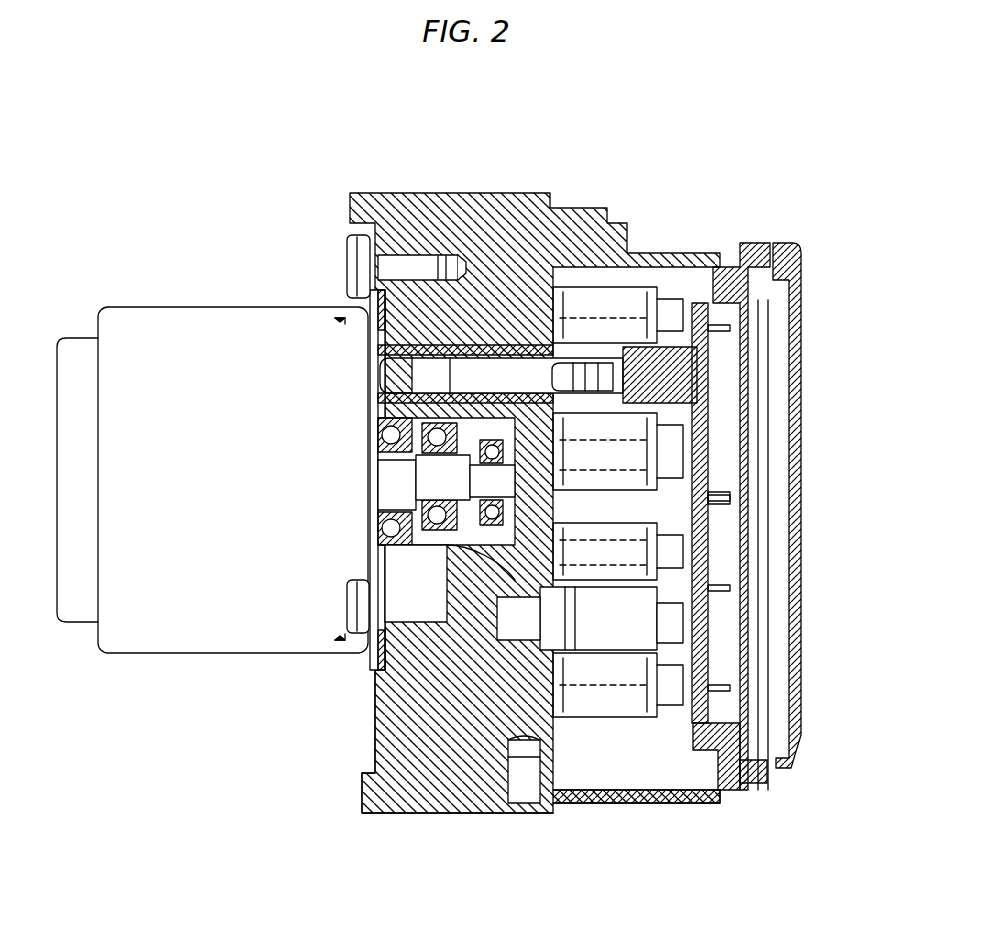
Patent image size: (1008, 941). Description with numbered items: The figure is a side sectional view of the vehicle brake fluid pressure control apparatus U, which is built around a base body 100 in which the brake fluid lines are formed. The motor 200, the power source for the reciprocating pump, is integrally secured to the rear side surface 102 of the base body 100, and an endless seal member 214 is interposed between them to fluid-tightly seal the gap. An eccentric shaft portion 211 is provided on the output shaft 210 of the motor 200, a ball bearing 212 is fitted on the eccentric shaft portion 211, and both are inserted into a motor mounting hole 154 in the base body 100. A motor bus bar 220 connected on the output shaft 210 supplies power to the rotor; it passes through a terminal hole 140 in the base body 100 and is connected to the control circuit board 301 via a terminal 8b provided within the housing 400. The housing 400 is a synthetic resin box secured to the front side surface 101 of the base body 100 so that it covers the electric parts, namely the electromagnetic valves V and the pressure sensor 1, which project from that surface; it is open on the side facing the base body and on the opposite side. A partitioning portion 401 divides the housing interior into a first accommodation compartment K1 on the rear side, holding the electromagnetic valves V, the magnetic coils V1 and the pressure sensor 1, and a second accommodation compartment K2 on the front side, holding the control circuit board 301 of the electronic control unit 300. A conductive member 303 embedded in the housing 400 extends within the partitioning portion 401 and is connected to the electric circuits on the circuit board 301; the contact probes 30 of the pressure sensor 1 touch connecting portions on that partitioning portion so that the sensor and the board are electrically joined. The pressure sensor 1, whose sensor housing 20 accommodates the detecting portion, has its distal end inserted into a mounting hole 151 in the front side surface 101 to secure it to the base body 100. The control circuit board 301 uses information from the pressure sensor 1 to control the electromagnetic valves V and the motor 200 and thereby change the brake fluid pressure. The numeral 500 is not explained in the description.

The vehicle brake fluid pressure control apparatus U is at (297, 186).
The pressure sensor 1 is at (630, 660).
The terminal 8b is at (705, 386).
The sensor housing 20 is at (600, 628).
The contact probes 30 is at (705, 615).
The base body 100 is at (428, 191).
The front side surface 101 is at (583, 735).
The rear side surface 102 is at (373, 740).
The terminal hole 140 is at (496, 358).
The mounting hole 151 is at (523, 648).
The motor mounting hole 154 is at (497, 572).
The motor 200 is at (150, 301).
The output shaft 210 is at (382, 520).
The eccentric shaft portion 211 is at (443, 476).
The ball bearing 212 is at (432, 540).
The endless seal member 214 is at (374, 326).
The motor bus bar 220 is at (519, 370).
The electronic control unit 300 is at (727, 249).
The control circuit board 301 is at (745, 660).
The conductive member 303 is at (766, 764).
The housing 400 is at (705, 805).
The partitioning portion 401 is at (712, 505).
The outer shell 500 is at (778, 783).
The electromagnetic valves V is at (755, 340).
The magnetic coils V1 is at (697, 435).
The first accommodation compartment K1 is at (712, 417).
The second accommodation compartment K2 is at (735, 558).